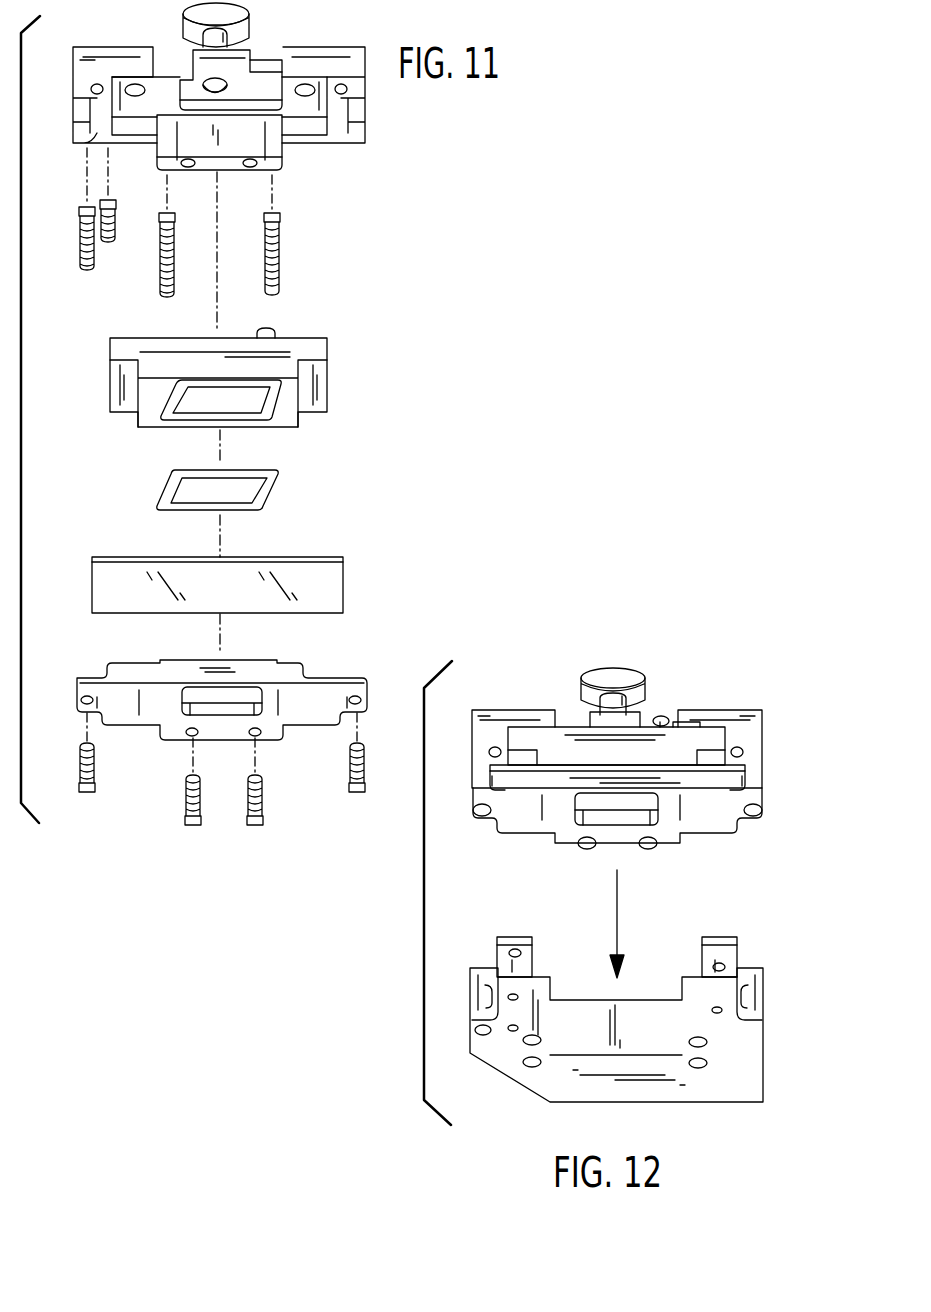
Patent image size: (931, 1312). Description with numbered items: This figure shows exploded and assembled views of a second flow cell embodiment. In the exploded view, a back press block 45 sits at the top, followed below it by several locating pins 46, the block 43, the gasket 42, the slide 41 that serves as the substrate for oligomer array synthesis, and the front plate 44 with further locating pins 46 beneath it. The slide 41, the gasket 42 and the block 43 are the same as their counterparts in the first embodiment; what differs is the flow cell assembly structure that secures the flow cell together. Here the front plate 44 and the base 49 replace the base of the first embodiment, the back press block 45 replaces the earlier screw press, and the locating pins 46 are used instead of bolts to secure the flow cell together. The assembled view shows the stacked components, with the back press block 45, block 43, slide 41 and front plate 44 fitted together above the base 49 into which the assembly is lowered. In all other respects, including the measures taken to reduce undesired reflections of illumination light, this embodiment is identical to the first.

In FIG. 11, the slide 41 is at (340, 588).
In FIG. 12, the slide 41 is at (712, 771).
In FIG. 11, the gasket 42 is at (268, 490).
In FIG. 11, the block 43 is at (327, 378).
In FIG. 12, the block 43 is at (690, 735).
In FIG. 11, the front plate 44 is at (332, 703).
In FIG. 12, the front plate 44 is at (697, 815).
In FIG. 11, the back press block 45 is at (252, 25).
In FIG. 12, the back press block 45 is at (478, 746).
In FIG. 11, the locating pins 46 is at (280, 248).
In FIG. 12, the base 49 is at (712, 1088).